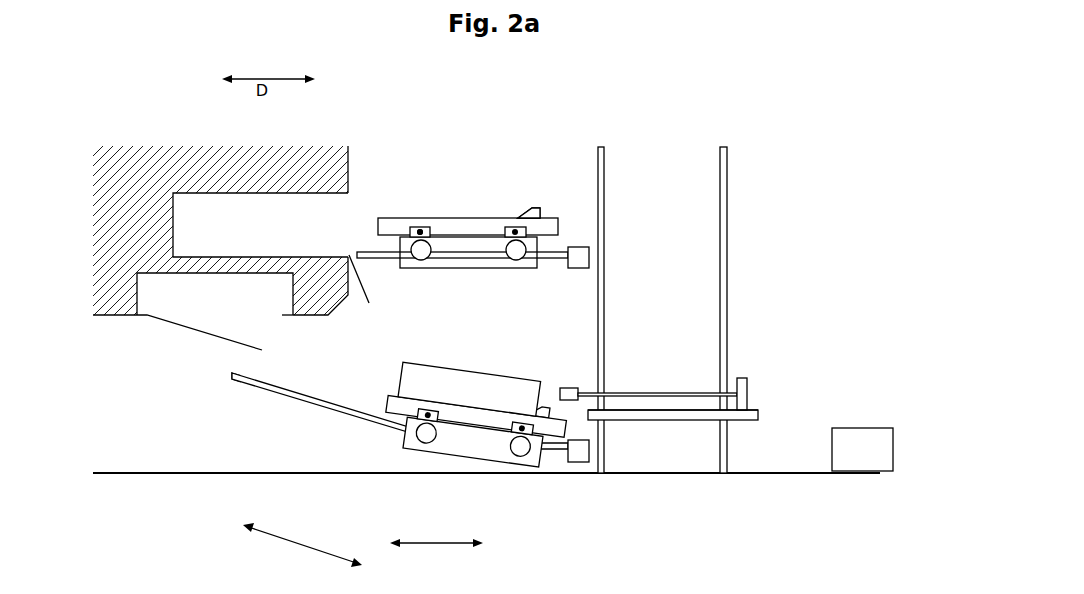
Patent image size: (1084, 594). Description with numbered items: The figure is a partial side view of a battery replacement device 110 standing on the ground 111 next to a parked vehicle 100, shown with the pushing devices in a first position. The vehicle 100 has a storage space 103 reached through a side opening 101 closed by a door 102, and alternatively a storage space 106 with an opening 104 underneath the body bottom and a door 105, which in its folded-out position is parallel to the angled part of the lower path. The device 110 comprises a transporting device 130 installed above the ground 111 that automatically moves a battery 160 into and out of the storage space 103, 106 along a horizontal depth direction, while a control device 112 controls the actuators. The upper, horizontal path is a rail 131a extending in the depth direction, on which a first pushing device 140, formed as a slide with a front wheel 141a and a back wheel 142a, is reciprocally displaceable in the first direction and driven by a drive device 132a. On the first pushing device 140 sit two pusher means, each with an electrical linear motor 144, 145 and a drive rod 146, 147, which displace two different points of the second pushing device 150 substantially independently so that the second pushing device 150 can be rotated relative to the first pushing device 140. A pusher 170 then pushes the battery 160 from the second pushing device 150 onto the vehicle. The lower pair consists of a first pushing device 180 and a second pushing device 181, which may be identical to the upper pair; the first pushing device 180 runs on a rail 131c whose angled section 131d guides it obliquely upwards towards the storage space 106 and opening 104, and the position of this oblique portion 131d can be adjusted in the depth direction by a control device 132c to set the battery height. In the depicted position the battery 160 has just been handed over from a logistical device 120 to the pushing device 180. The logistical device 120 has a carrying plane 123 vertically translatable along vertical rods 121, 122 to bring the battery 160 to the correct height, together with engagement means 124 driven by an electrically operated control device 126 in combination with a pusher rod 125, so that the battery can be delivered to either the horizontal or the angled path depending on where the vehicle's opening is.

The vehicle 100 is at (334, 297).
The opening 101 is at (325, 264).
The door 102 is at (362, 290).
The storage space 103 is at (260, 225).
The opening 104 is at (263, 313).
The door 105 is at (213, 338).
The storage space 106 is at (215, 294).
The device 110 is at (726, 330).
The ground 111 is at (810, 474).
The control device 112 is at (862, 449).
The logistical device 120 is at (695, 310).
The vertical rod 121 is at (615, 310).
The vertical rod 122 is at (738, 310).
The carrying plane 123 is at (748, 422).
The engagement means 124 is at (580, 383).
The pusher rod 125 is at (657, 397).
The electrically operated control device 126 is at (750, 390).
The transporting device 130 is at (404, 464).
The rail 131a is at (556, 260).
The rail 131c is at (343, 415).
The angled section 131d is at (247, 383).
The drive device 132a is at (578, 270).
The control device 132c is at (578, 465).
The first pushing device 140 is at (462, 270).
The front wheel 141a is at (420, 262).
The back wheel 142a is at (516, 262).
The electrical linear motor 144 is at (419, 226).
The electrical linear motor 145 is at (512, 226).
The drive rod 146 is at (414, 228).
The drive rod 147 is at (528, 229).
The second pushing device 150 is at (452, 216).
The battery 160 is at (469, 389).
The pusher 170 is at (535, 208).
The first pushing device 180 is at (462, 468).
The second pushing device 181 is at (556, 452).